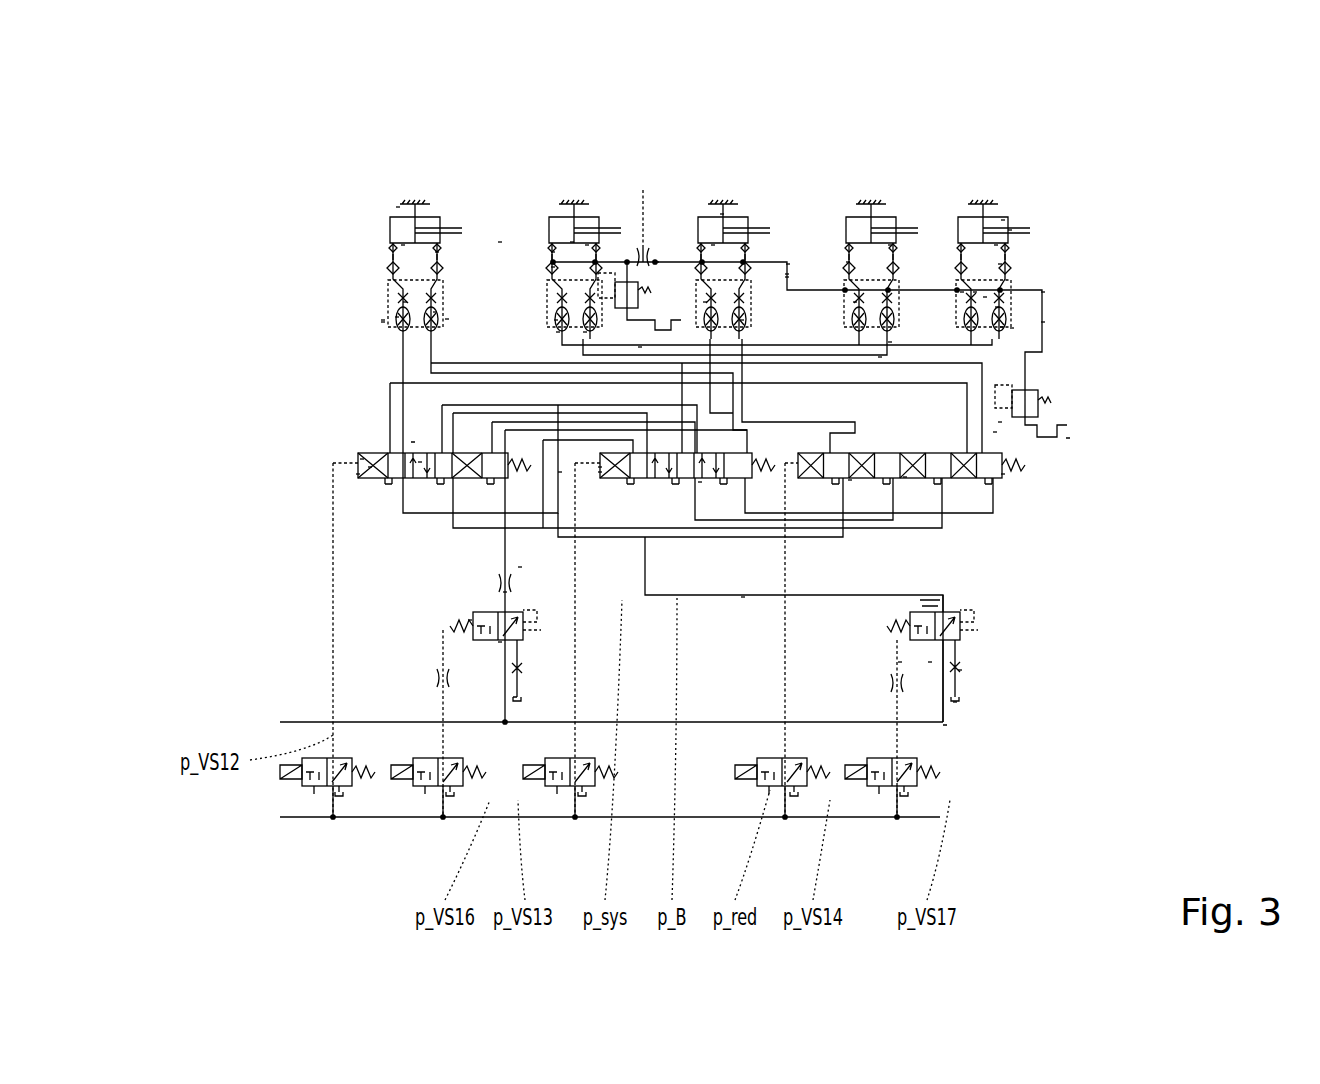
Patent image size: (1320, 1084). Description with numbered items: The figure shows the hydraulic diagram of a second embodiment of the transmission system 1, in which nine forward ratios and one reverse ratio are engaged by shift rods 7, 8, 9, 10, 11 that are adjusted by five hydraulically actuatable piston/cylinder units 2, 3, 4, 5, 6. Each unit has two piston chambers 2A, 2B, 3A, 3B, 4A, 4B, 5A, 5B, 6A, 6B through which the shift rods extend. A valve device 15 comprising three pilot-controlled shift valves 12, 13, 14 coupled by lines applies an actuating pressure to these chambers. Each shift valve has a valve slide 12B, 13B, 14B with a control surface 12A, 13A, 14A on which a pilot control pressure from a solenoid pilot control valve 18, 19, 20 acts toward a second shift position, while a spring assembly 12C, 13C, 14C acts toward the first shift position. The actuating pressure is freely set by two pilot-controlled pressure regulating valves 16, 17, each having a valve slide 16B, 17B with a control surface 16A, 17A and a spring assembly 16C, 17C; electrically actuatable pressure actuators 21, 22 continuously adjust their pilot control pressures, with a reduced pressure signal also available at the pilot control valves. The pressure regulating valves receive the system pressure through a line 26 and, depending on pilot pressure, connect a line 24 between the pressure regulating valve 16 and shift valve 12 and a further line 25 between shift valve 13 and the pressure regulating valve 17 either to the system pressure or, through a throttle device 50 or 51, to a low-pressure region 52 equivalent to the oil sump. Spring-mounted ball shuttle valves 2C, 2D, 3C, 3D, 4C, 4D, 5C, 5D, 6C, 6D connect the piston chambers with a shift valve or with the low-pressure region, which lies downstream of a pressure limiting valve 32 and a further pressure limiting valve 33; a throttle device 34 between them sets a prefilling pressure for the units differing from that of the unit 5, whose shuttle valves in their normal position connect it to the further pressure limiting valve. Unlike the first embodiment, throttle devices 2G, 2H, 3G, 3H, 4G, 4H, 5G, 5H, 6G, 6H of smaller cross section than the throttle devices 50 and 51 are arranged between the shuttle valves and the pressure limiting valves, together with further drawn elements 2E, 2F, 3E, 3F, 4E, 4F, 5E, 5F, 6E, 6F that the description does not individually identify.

The transmission system 1 is at (610, 875).
The piston/cylinder unit 2 is at (732, 204).
The piston chamber 2A is at (706, 141).
The piston chamber 2B is at (764, 216).
The ball shuttle valve 2C is at (686, 207).
The ball shuttle valve 2D is at (845, 165).
The actuator part 2E is at (726, 179).
The actuator part 2F is at (810, 195).
The throttle device 2G is at (680, 214).
The throttle device 2H is at (800, 220).
The piston/cylinder unit 3 is at (399, 226).
The piston chamber 3A is at (334, 216).
The piston chamber 3B is at (380, 157).
The ball shuttle valve 3C is at (329, 292).
The ball shuttle valve 3D is at (437, 212).
The actuator part 3E is at (261, 284).
The actuator part 3F is at (420, 160).
The throttle device 3G is at (304, 271).
The throttle device 3H is at (308, 244).
The piston/cylinder unit 4 is at (1011, 226).
The piston chamber 4A is at (1013, 166).
The piston chamber 4B is at (1068, 208).
The ball shuttle valve 4C is at (1120, 341).
The ball shuttle valve 4D is at (1070, 322).
The actuator part 4E is at (1097, 276).
The actuator part 4F is at (1099, 306).
The throttle device 4G is at (1064, 245).
The throttle device 4H is at (1056, 283).
The piston/cylinder unit 5 is at (583, 204).
The piston chamber 5A is at (536, 182).
The piston chamber 5B is at (580, 179).
The ball shuttle valve 5C is at (348, 309).
The ball shuttle valve 5D is at (398, 323).
The actuator part 5E is at (475, 155).
The actuator part 5F is at (515, 216).
The throttle device 5G is at (524, 168).
The throttle device 5H is at (557, 155).
The piston/cylinder unit 6 is at (880, 204).
The piston chamber 6A is at (868, 207).
The piston chamber 6B is at (910, 179).
The ball shuttle valve 6C is at (1061, 466).
The ball shuttle valve 6D is at (1039, 379).
The actuator part 6E is at (1098, 451).
The actuator part 6F is at (1008, 361).
The throttle device 6G is at (965, 202).
The throttle device 6H is at (988, 157).
The shift rod 7 is at (795, 166).
The shift rod 8 is at (391, 160).
The shift rod 9 is at (1113, 247).
The shift rod 10 is at (633, 189).
The shift rod 11 is at (945, 180).
The shift valve 12 is at (371, 452).
The control surface 12A is at (242, 462).
The valve slide 12B is at (248, 434).
The spring assembly 12C is at (244, 410).
The shift valve 13 is at (456, 506).
The control surface 13A is at (399, 483).
The valve slide 13B is at (399, 506).
The spring assembly 13C is at (919, 550).
The shift valve 14 is at (963, 496).
The control surface 14A is at (1032, 540).
The valve slide 14B is at (1022, 527).
The spring assembly 14C is at (1108, 496).
The valve device 15 is at (316, 421).
The pressure regulating valve 16 is at (376, 637).
The control surface 16A is at (349, 640).
The valve slide 16B is at (352, 566).
The spring assembly 16C is at (334, 600).
The pressure regulating valve 17 is at (1008, 658).
The control surface 17A is at (1072, 730).
The valve slide 17B is at (1049, 680).
The spring assembly 17C is at (1019, 740).
The pilot control valve 18 is at (327, 829).
The pilot control valve 19 is at (570, 829).
The pilot control valve 20 is at (782, 829).
The pressure actuator 21 is at (438, 829).
The pressure actuator 22 is at (892, 829).
The line 24 is at (350, 495).
The further line 25 is at (719, 747).
The line 26 is at (591, 732).
The pressure limiting valve 32 is at (1062, 410).
The further pressure limiting valve 33 is at (390, 342).
The throttle device 34 is at (639, 199).
The throttle device 50 is at (577, 720).
The throttle device 51 is at (1010, 707).
The low-pressure region 52 is at (670, 621).